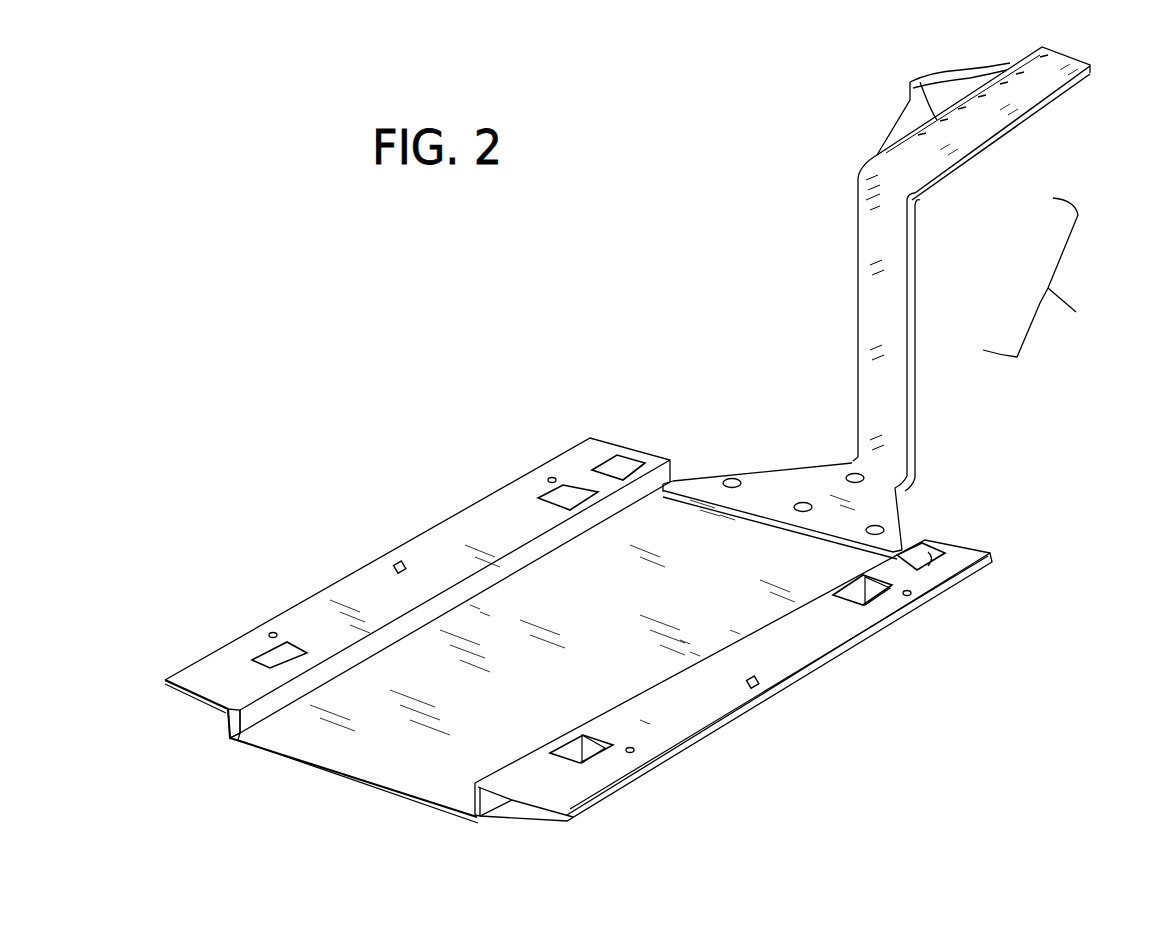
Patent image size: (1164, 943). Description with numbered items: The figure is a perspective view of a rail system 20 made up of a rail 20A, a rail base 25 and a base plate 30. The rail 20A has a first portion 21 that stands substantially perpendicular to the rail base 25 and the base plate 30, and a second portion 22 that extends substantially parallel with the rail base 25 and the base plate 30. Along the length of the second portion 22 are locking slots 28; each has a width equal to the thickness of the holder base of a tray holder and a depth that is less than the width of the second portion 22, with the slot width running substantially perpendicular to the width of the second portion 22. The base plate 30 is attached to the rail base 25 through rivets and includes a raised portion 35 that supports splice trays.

The rail system 20 is at (575, 402).
The rail 20A is at (1061, 277).
The first portion 21 is at (917, 303).
The second portion 22 is at (953, 167).
The rail base 25 is at (898, 555).
The locking slots 28 is at (943, 102).
The base plate 30 is at (623, 670).
The raised portion 35 is at (272, 742).